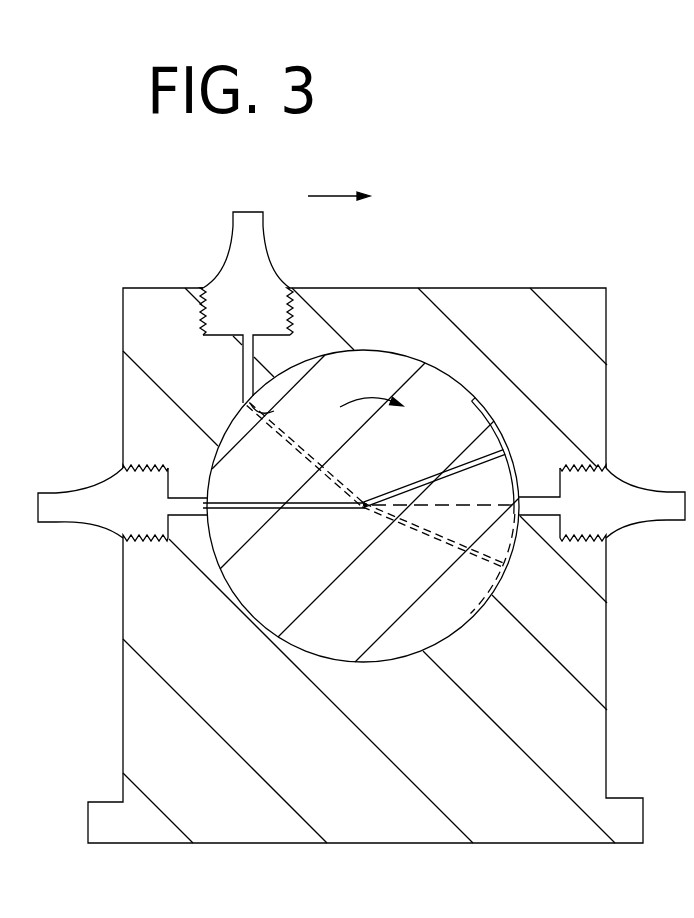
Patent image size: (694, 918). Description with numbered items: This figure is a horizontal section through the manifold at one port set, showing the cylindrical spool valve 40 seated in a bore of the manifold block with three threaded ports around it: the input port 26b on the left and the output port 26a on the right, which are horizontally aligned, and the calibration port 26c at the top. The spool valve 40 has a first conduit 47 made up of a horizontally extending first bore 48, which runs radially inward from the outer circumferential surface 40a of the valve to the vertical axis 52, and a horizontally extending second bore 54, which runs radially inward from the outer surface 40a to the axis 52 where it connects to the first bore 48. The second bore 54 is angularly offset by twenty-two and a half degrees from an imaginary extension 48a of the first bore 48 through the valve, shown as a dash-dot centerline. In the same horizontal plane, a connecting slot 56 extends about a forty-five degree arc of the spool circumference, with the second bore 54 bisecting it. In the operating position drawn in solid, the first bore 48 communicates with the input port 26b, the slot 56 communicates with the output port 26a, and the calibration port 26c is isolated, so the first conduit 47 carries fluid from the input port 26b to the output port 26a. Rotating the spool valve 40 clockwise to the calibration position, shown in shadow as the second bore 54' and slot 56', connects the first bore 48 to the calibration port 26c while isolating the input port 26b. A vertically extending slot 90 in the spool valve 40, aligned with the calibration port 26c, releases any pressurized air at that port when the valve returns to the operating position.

The output port 26a is at (622, 540).
The input port 26b is at (114, 469).
The calibration port 26c is at (290, 288).
The spool valve 40 is at (282, 643).
The outer surface 40a is at (232, 437).
The first conduit 47 is at (368, 500).
The first bore 48 is at (306, 454).
The imaginary extension 48a is at (478, 505).
The vertical axis 52 is at (362, 514).
The second bore 54 is at (433, 461).
The second bore 54' is at (432, 542).
The connecting slot 56 is at (522, 439).
The connecting slot 56' is at (521, 568).
The vertical slot 90 is at (273, 410).